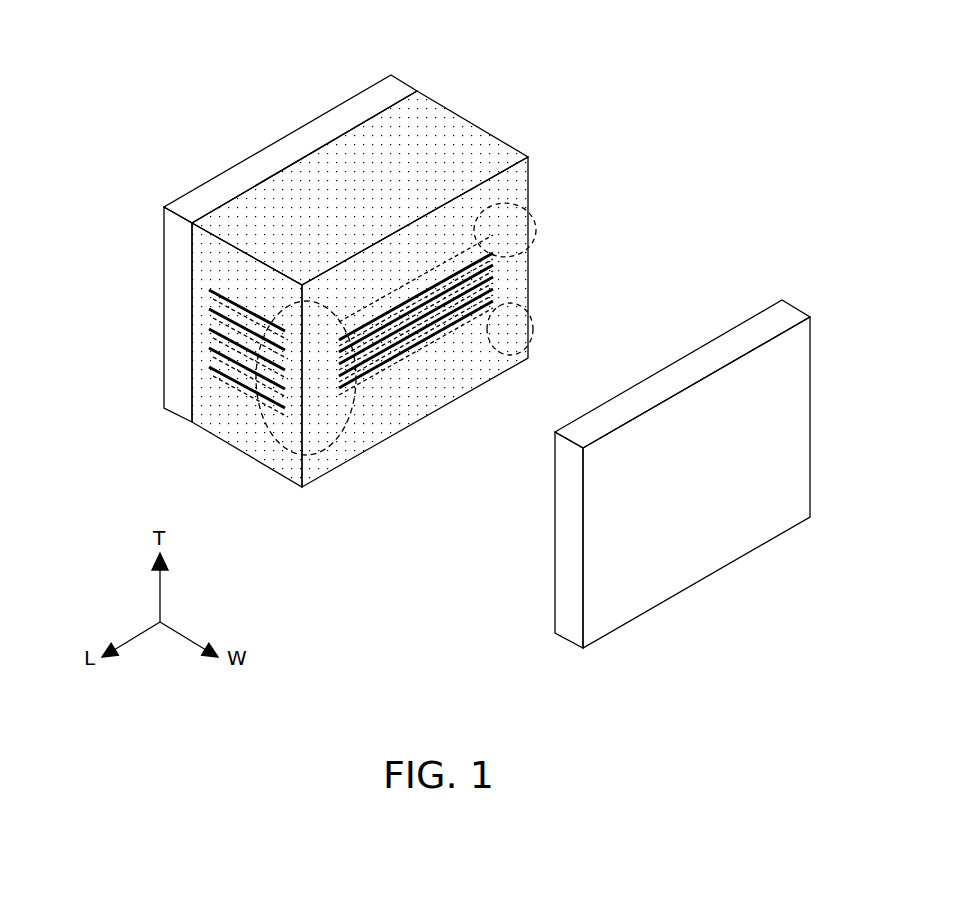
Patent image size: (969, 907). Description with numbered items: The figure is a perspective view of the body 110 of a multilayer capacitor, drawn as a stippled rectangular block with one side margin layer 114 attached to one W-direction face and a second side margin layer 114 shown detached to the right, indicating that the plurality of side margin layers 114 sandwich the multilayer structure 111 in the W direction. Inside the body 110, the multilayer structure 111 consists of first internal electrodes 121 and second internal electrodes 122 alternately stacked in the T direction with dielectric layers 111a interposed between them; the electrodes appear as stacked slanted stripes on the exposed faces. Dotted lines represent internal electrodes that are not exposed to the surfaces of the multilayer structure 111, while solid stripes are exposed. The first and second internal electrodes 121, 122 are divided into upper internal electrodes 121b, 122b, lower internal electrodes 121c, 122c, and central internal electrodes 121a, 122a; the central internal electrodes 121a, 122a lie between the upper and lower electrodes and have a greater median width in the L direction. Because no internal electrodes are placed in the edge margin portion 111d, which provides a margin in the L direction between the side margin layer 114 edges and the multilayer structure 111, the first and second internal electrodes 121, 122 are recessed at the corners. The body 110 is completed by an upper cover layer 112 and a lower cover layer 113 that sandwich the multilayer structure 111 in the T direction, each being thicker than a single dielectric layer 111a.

The body 110 is at (185, 30).
The multilayer structure 111 is at (380, 300).
The dielectric layer 111a is at (492, 262).
The edge margin portion 111d is at (281, 421).
The upper cover layer 112 is at (510, 190).
The lower cover layer 113 is at (458, 384).
The side margin layer 114 is at (277, 157).
The first internal electrode 121 is at (211, 371).
The second internal electrode 122 is at (214, 383).
The central internal electrode 121a is at (493, 283).
The upper internal electrode 121b is at (530, 212).
The lower internal electrode 121c is at (530, 336).
The central internal electrode 122a is at (496, 296).
The upper internal electrode 122b is at (528, 240).
The lower internal electrode 122c is at (530, 357).